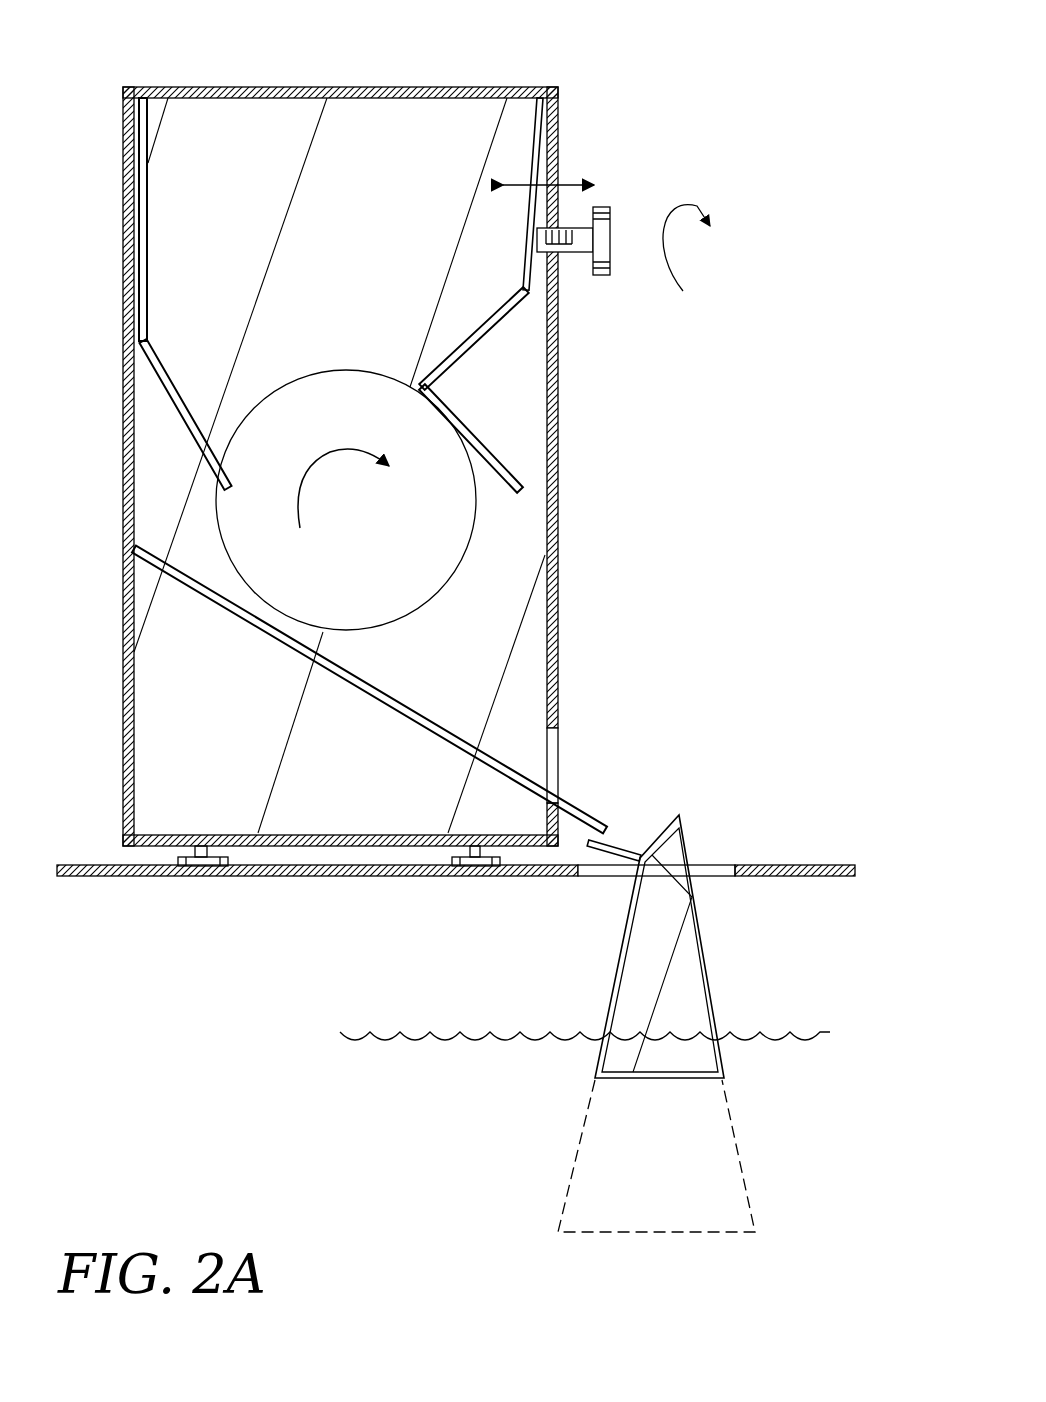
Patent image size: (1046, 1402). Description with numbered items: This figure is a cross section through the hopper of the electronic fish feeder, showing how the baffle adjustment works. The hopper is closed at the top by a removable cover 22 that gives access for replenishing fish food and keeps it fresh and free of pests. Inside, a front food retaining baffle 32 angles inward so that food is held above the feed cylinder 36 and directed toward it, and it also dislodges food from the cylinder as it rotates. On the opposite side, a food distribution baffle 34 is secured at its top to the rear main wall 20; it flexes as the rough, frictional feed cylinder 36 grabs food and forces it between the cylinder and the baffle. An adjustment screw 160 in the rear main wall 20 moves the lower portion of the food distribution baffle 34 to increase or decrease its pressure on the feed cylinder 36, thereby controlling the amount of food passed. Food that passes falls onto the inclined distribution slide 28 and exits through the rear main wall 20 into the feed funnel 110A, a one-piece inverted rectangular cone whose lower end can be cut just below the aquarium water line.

The rear main wall 20 is at (557, 578).
The removable cover 22 is at (345, 87).
The distribution slide 28 is at (215, 600).
The front food retaining baffle 32 is at (172, 406).
The food distribution baffle 34 is at (476, 432).
The feed cylinder 36 is at (346, 500).
The adjustment screw 160 is at (612, 233).
The feed funnel 110A is at (678, 816).